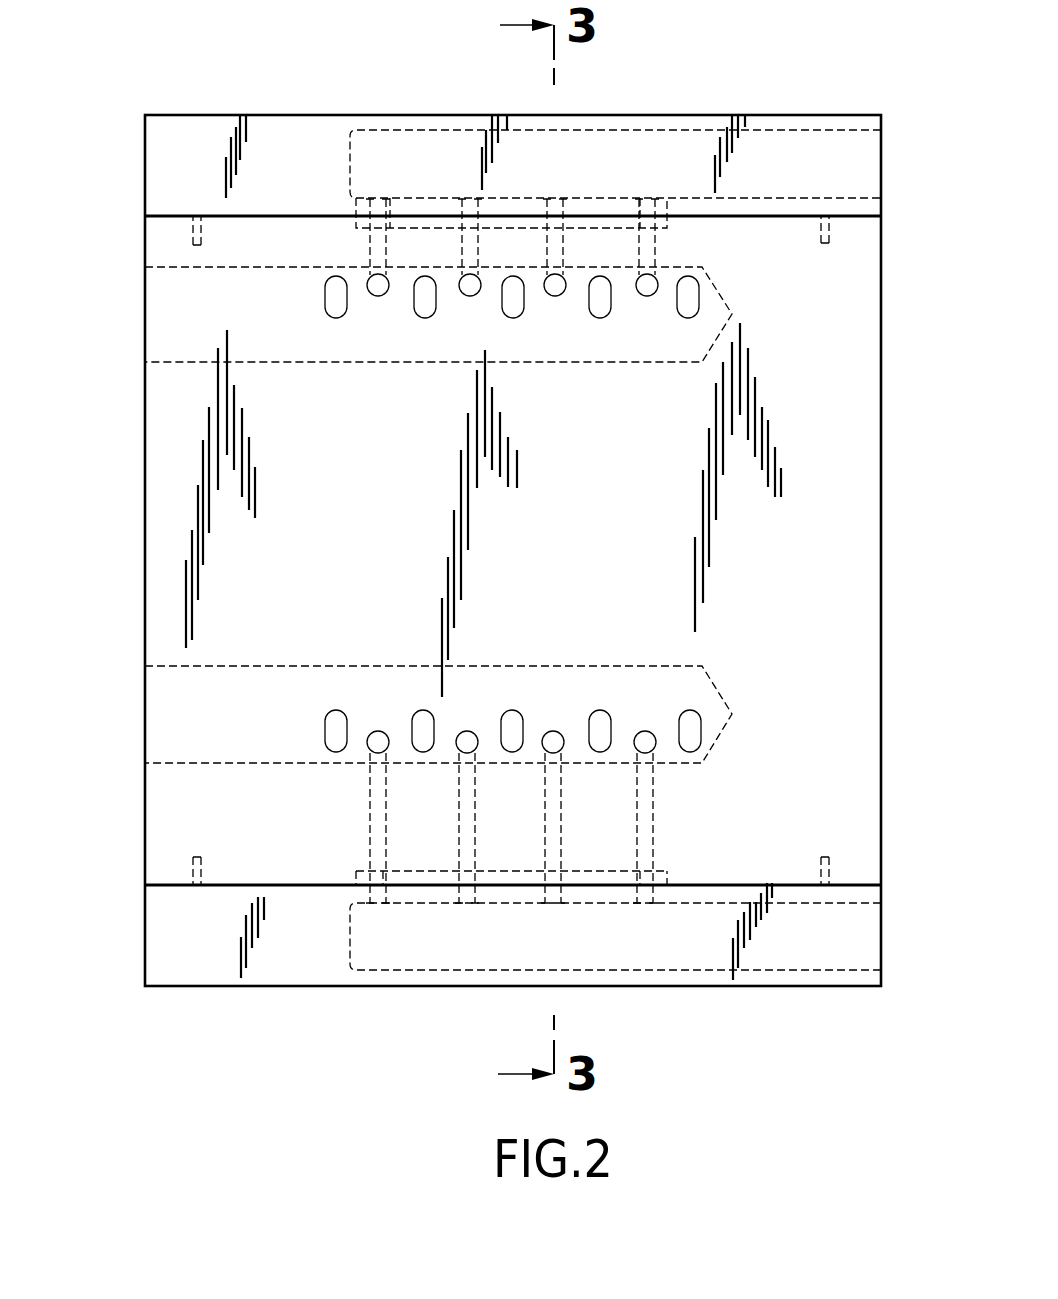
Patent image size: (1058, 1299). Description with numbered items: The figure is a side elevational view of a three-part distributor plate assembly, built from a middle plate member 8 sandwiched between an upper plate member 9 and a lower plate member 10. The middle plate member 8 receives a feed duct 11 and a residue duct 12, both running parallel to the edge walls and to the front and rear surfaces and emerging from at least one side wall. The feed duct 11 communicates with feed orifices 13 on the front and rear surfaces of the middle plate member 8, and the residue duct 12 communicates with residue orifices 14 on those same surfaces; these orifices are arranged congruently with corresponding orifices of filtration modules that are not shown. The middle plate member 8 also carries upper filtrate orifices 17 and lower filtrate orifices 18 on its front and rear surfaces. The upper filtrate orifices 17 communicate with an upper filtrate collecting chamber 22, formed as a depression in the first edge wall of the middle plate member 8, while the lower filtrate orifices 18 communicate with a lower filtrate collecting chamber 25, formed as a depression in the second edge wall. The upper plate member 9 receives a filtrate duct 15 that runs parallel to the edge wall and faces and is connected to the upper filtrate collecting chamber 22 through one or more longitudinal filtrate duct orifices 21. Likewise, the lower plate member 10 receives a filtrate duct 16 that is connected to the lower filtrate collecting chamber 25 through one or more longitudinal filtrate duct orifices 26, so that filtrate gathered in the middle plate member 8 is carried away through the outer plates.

The middle plate member 8 is at (140, 457).
The upper plate member 9 is at (134, 168).
The lower plate member 10 is at (134, 930).
The feed duct 11 is at (178, 723).
The residue duct 12 is at (153, 315).
The feed orifices 13 is at (690, 733).
The residue orifices 14 is at (690, 296).
The filtrate duct 15 is at (870, 167).
The filtrate duct 16 is at (870, 944).
The upper filtrate orifices 17 is at (380, 284).
The lower filtrate orifices 18 is at (378, 742).
The longitudinal filtrate duct orifices 21 is at (670, 215).
The upper filtrate collecting chamber 22 is at (430, 228).
The lower filtrate collecting chamber 25 is at (590, 880).
The longitudinal filtrate duct orifices 26 is at (656, 900).